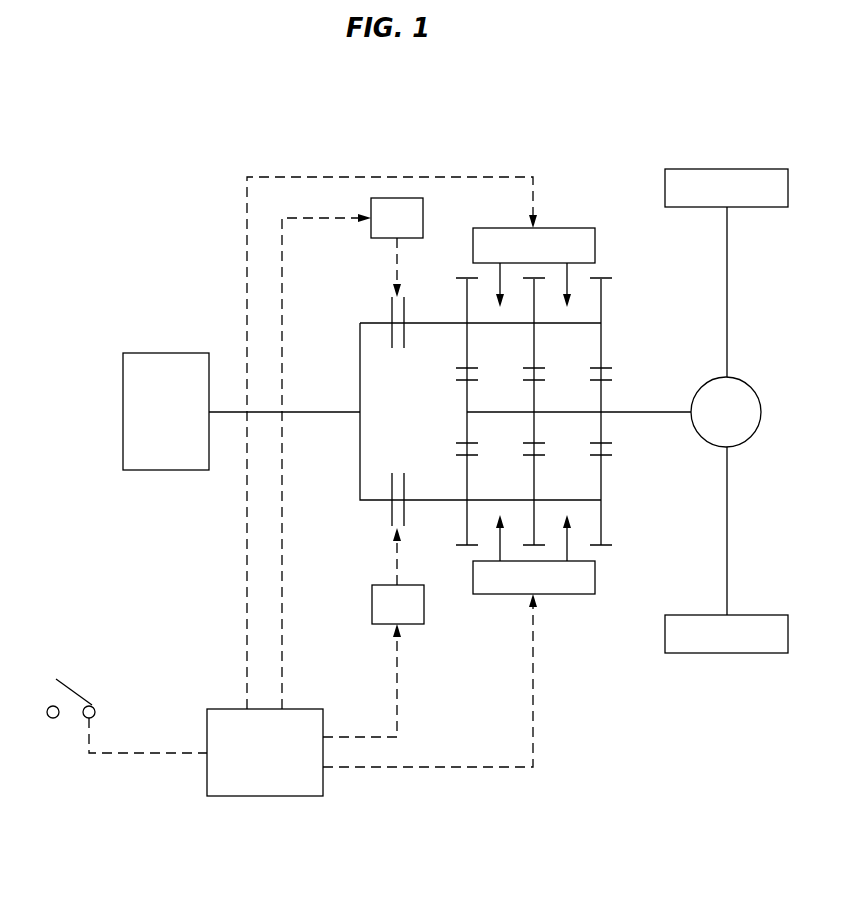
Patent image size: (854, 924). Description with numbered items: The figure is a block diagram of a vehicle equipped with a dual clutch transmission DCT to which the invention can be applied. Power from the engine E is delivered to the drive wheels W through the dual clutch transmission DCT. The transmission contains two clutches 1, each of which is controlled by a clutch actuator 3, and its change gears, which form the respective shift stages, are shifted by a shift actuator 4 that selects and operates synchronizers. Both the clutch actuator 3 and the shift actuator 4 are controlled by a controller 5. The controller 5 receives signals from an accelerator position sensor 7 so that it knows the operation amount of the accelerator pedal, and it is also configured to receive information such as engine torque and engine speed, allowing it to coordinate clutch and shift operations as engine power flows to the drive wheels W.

The clutches 1 is at (390, 305).
The clutch actuator 3 is at (421, 207).
The shift actuator 4 is at (575, 236).
The controller 5 is at (268, 788).
The accelerator position sensor (APS) 7 is at (86, 703).
The engine E is at (160, 358).
The drive wheels W is at (727, 177).
The dual clutch transmission DCT is at (605, 160).